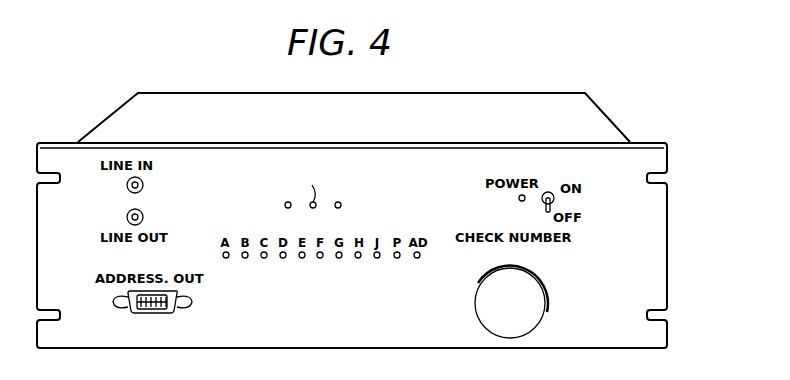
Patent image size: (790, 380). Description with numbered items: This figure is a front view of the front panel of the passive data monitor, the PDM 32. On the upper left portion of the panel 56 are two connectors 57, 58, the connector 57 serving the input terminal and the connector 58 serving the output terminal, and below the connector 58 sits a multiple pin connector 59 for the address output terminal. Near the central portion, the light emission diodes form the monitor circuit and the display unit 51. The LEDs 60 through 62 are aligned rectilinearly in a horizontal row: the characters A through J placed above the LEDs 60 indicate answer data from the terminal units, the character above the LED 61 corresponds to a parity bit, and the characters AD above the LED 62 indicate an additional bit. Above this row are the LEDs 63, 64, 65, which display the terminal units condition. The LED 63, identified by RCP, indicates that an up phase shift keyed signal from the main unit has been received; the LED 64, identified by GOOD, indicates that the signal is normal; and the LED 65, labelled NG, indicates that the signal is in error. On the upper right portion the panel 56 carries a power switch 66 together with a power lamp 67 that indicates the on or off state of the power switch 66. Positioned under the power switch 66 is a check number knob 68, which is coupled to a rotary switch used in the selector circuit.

The PDM 32 is at (497, 104).
The display unit 51 is at (368, 199).
The panel 56 is at (667, 237).
The connector 57 is at (143, 186).
The connector 58 is at (143, 218).
The multiple pin connector 59 is at (165, 313).
The LEDs 60 is at (382, 259).
The LED 61 is at (397, 259).
The LED 62 is at (419, 258).
The LED 63 is at (285, 205).
The LED 64 is at (311, 208).
The LED 65 is at (340, 208).
The power switch 66 is at (545, 210).
The power lamp 67 is at (518, 199).
The check number knob 68 is at (535, 323).